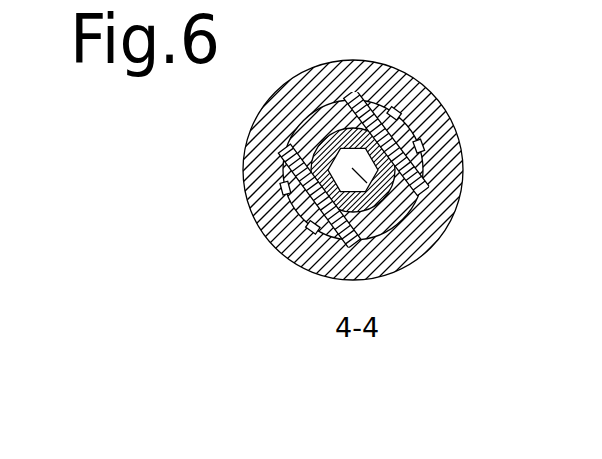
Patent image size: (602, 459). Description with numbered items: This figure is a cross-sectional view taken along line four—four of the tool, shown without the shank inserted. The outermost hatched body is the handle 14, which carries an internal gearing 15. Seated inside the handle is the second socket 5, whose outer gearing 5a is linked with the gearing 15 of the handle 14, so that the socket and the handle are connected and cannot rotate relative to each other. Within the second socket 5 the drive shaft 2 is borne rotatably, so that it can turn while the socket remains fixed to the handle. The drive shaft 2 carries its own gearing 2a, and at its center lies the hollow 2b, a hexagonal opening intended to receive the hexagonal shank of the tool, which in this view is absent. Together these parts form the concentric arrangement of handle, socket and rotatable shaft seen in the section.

The handle 14 is at (265, 173).
The gearing of the handle 15 is at (377, 98).
The second socket 5 is at (392, 115).
The gearing of the second socket 5a is at (425, 143).
The drive shaft 2 is at (378, 198).
The gearing of the drive shaft 2a is at (320, 210).
The hollow 2b is at (390, 214).